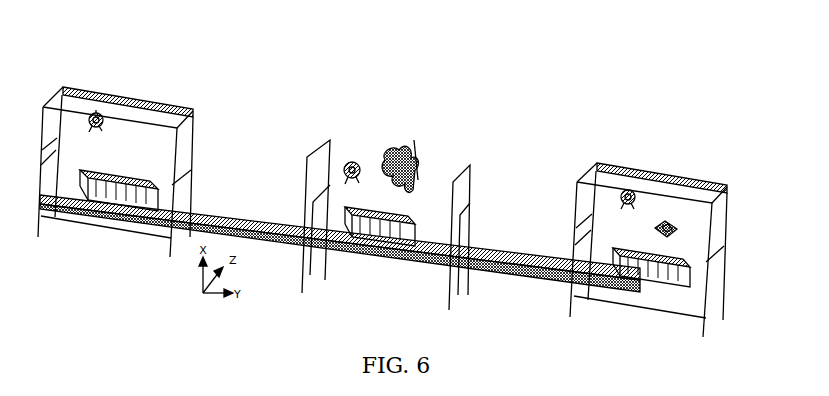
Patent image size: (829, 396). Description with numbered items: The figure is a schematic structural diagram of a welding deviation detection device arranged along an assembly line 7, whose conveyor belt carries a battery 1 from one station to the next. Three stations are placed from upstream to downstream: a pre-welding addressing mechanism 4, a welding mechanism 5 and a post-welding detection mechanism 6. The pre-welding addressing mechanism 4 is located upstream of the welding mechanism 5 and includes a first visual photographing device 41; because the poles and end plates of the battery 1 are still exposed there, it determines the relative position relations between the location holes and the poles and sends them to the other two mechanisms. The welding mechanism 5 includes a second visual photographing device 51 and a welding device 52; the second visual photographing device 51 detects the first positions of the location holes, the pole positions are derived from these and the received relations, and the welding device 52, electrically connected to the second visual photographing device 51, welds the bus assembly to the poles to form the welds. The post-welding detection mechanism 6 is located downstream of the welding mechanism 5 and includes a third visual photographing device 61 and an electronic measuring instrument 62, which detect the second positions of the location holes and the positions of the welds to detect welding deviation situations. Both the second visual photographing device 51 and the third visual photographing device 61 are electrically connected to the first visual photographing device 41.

The battery 1 is at (110, 204).
The pre-welding addressing mechanism 4 is at (150, 89).
The first visual photographing device 41 is at (96, 96).
The welding mechanism 5 is at (446, 142).
The second visual photographing device 51 is at (354, 150).
The welding device 52 is at (403, 146).
The post-welding detection mechanism 6 is at (704, 176).
The third visual photographing device 61 is at (629, 178).
The electronic measuring instrument 62 is at (667, 210).
The assembly line 7 is at (237, 200).